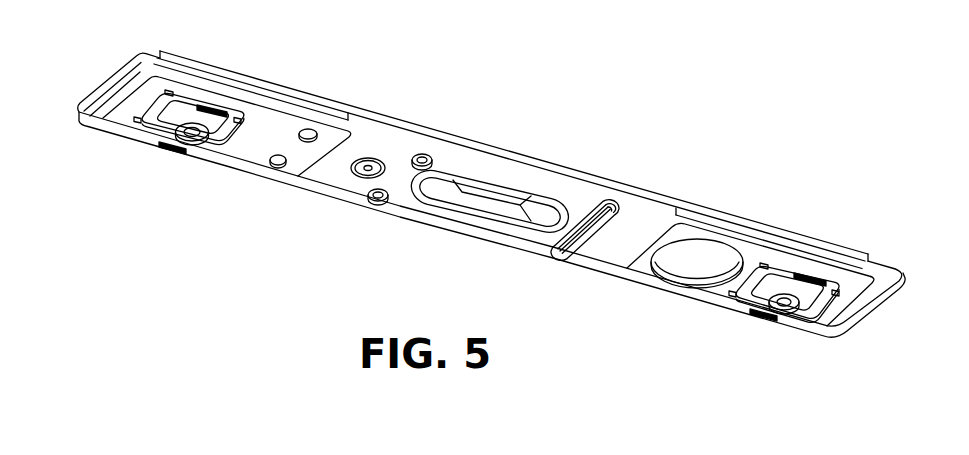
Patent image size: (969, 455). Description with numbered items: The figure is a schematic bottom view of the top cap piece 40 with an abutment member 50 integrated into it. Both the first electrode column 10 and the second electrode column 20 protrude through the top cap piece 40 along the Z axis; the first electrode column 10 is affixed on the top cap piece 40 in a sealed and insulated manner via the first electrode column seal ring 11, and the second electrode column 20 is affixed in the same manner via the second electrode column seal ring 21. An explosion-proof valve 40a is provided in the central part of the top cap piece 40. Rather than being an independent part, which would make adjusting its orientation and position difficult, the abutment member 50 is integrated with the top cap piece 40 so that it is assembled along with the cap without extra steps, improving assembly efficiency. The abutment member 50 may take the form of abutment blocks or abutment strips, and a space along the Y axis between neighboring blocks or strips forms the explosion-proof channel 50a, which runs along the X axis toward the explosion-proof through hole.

The first electrode column 10 is at (197, 142).
The first electrode column seal ring 11 is at (206, 105).
The second electrode column 20 is at (782, 309).
The second electrode column seal ring 21 is at (828, 279).
The top cap piece 40 is at (688, 118).
The explosion-proof valve 40a is at (550, 206).
The abutment member 50 is at (420, 166).
The explosion-proof channel 50a is at (399, 180).